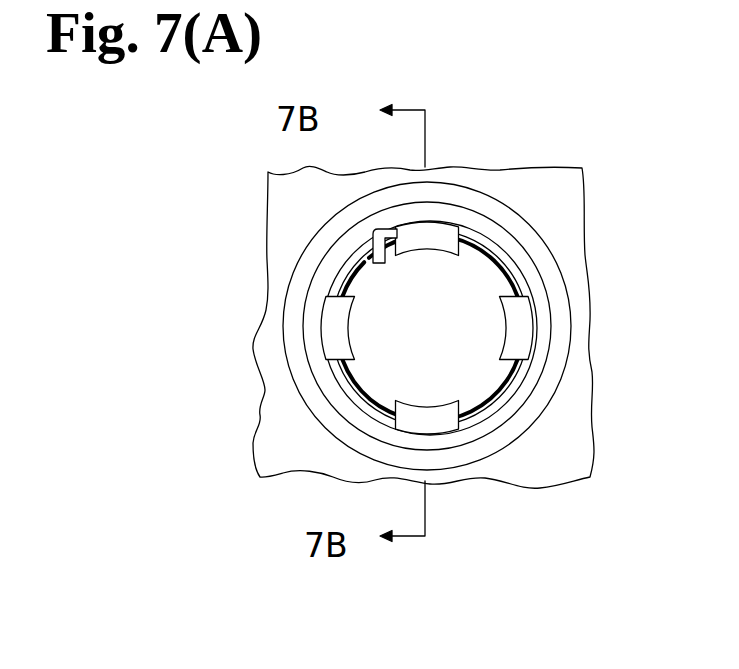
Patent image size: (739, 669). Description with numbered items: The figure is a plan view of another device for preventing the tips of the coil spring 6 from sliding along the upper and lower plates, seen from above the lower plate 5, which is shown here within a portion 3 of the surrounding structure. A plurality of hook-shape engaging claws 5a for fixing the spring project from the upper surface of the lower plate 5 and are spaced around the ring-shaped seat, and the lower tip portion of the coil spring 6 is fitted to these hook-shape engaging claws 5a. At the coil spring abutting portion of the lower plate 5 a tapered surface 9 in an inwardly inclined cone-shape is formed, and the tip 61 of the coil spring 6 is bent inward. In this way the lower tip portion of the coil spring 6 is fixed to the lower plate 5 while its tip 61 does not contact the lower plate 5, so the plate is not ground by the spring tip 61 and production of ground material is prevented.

The panel 3 is at (566, 216).
The lower plate 5 is at (557, 349).
The hook-shape engaging claws 5a is at (333, 327).
The coil spring 6 is at (477, 233).
The tip 61 is at (355, 238).
The tapered surface 9 is at (353, 245).